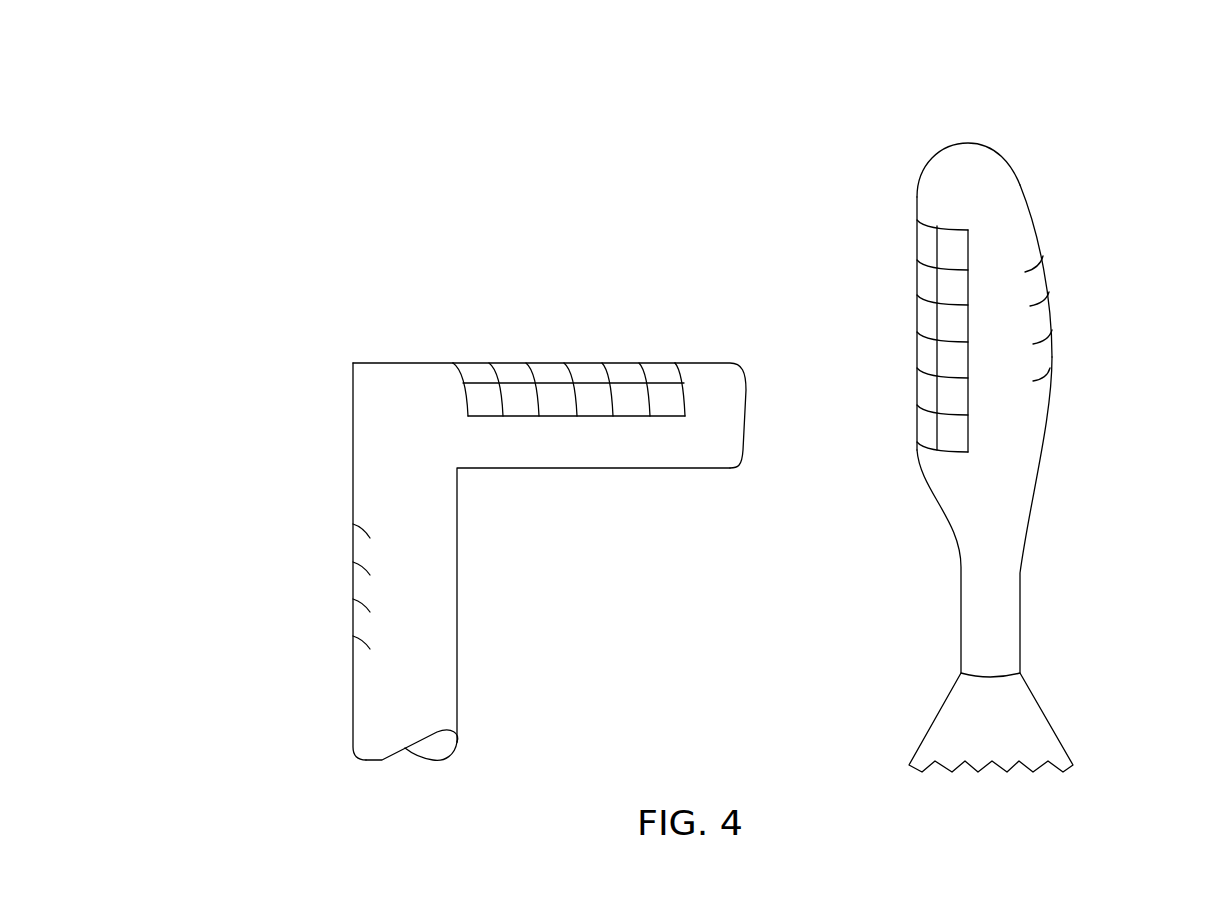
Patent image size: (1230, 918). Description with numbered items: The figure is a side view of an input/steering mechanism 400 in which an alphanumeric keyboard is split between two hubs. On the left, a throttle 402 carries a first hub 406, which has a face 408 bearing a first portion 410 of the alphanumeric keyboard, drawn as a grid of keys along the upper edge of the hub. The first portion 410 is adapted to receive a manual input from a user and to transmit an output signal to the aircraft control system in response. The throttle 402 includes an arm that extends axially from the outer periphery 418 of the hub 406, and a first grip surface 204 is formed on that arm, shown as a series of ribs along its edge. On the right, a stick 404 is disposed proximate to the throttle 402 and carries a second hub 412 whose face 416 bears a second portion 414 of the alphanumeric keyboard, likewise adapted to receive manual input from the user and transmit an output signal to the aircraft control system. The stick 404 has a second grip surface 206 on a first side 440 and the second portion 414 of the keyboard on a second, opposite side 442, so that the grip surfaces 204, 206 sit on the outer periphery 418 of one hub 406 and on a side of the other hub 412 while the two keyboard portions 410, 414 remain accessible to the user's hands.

The input/steering mechanism 400 is at (843, 113).
The throttle 402 is at (275, 512).
The stick 404 is at (1114, 359).
The first hub 406 is at (427, 378).
The face 408 is at (706, 376).
The first portion of alphanumeric keyboard 410 is at (585, 376).
The second hub 412 is at (1012, 186).
The second portion of alphanumeric keyboard 414 is at (920, 387).
The face 416 is at (942, 213).
The outer periphery 418 is at (353, 382).
The first side 440 is at (915, 240).
The second side 442 is at (1037, 247).
The first grip surface 204 is at (353, 614).
The second grip surface 206 is at (1050, 313).